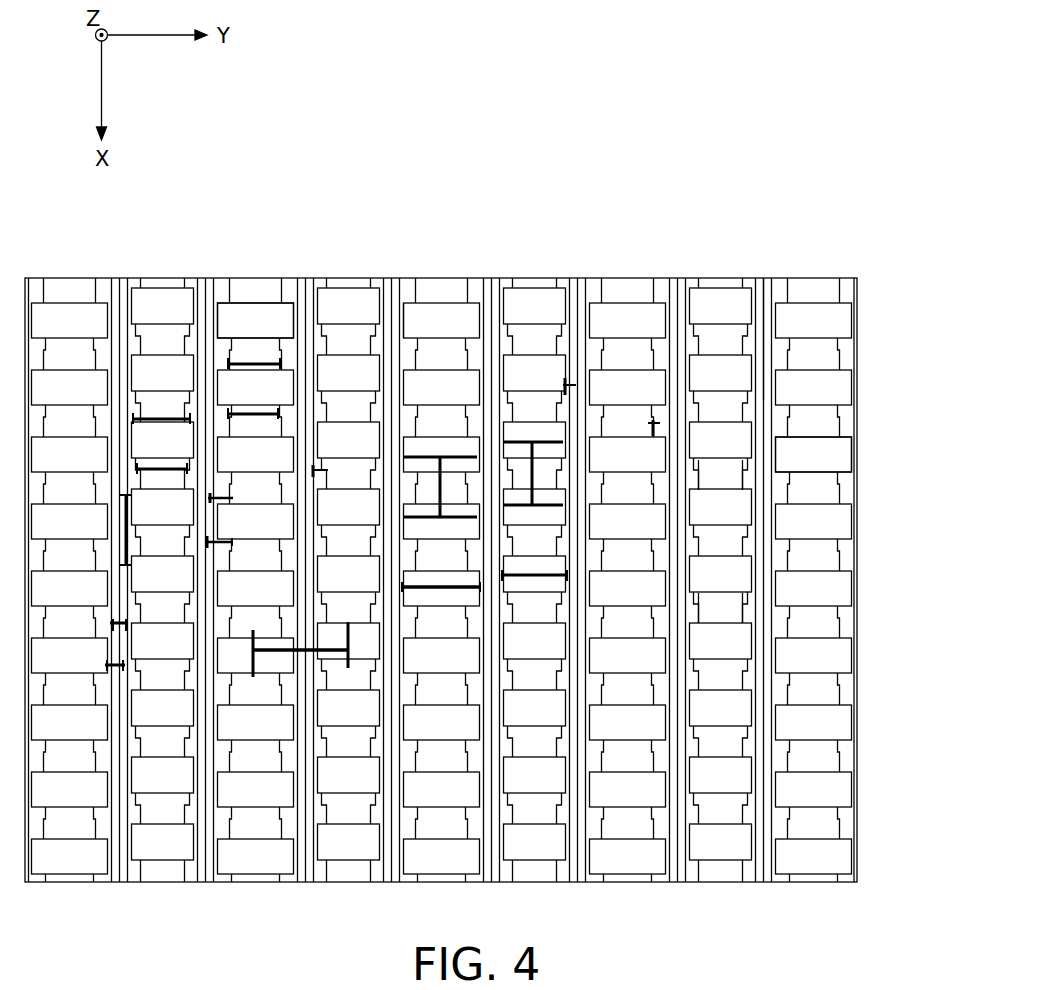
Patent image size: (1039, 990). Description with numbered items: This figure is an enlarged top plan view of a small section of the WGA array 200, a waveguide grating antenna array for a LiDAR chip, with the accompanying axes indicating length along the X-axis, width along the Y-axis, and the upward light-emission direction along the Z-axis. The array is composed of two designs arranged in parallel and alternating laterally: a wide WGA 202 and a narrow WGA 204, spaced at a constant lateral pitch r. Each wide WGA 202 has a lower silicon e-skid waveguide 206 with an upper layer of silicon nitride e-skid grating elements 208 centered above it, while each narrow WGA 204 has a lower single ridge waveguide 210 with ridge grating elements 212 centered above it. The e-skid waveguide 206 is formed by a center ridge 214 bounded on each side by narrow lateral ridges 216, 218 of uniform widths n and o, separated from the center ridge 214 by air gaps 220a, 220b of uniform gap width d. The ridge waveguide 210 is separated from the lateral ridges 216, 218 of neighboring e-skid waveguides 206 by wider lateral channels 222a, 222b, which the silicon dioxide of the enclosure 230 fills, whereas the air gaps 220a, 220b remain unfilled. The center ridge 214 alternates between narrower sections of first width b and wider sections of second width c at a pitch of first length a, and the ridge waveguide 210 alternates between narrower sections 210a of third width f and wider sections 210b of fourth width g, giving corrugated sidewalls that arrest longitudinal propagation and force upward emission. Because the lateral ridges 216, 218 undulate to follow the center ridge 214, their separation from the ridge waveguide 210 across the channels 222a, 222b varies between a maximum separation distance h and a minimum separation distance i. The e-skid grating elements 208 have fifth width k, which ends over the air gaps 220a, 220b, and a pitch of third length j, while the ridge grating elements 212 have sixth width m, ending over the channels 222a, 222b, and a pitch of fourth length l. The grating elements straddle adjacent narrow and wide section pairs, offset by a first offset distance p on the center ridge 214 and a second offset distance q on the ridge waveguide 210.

The WGA array 200 is at (863, 110).
The wide WGA 202 is at (538, 255).
The narrow WGA 204 is at (630, 255).
The e-skid waveguide 206 is at (760, 288).
The e-skid grating elements 208 is at (720, 295).
The ridge waveguide 210 is at (825, 420).
The narrower sections 210a is at (258, 412).
The wider sections 210b is at (235, 358).
The ridge grating elements 212 is at (825, 450).
The center ridge 214 is at (718, 473).
The lateral ridge 216 is at (675, 530).
The lateral ridge 218 is at (770, 558).
The air gap 220a is at (760, 600).
The air gap 220b is at (705, 607).
The lateral channel 222a is at (290, 282).
The lateral channel 222b is at (407, 282).
The enclosure 230 is at (840, 292).
The first length a is at (118, 547).
The first width b is at (168, 470).
The second width c is at (150, 411).
The gap width d is at (329, 470).
The third width f is at (266, 419).
The fourth width g is at (244, 361).
The maximum separation distance h is at (220, 547).
The minimum separation distance i is at (220, 498).
The third length j is at (534, 488).
The fifth width k is at (548, 580).
The fourth length l is at (445, 485).
The sixth width m is at (452, 590).
The width of lateral ridge n is at (112, 623).
The width of lateral ridge o is at (113, 667).
The first offset distance p is at (576, 387).
The second offset distance q is at (650, 433).
The lateral pitch r is at (309, 644).